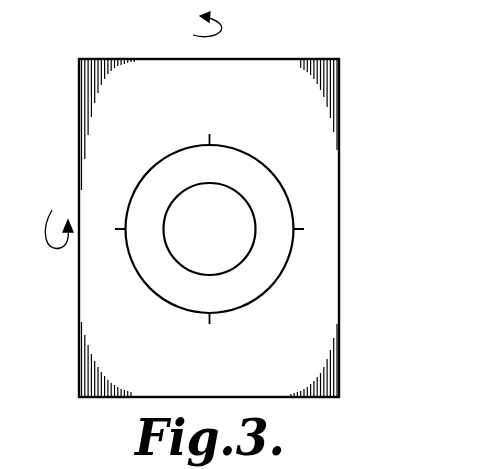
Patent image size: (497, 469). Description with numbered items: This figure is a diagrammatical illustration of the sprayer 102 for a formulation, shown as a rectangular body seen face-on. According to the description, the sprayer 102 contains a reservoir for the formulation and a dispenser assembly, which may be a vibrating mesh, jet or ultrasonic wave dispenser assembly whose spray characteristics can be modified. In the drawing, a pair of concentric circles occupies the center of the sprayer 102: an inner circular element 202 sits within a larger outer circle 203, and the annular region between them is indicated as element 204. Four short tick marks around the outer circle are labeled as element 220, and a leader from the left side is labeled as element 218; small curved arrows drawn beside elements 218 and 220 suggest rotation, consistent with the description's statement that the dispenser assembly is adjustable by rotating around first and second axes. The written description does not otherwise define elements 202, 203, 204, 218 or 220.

The sprayer 102 is at (297, 60).
The inner circular region 202 is at (252, 250).
The outer circle / annular region 203 is at (258, 155).
The annular gap 204 is at (279, 178).
The rotation direction 218 is at (120, 228).
The alignment marks 220 is at (212, 140).